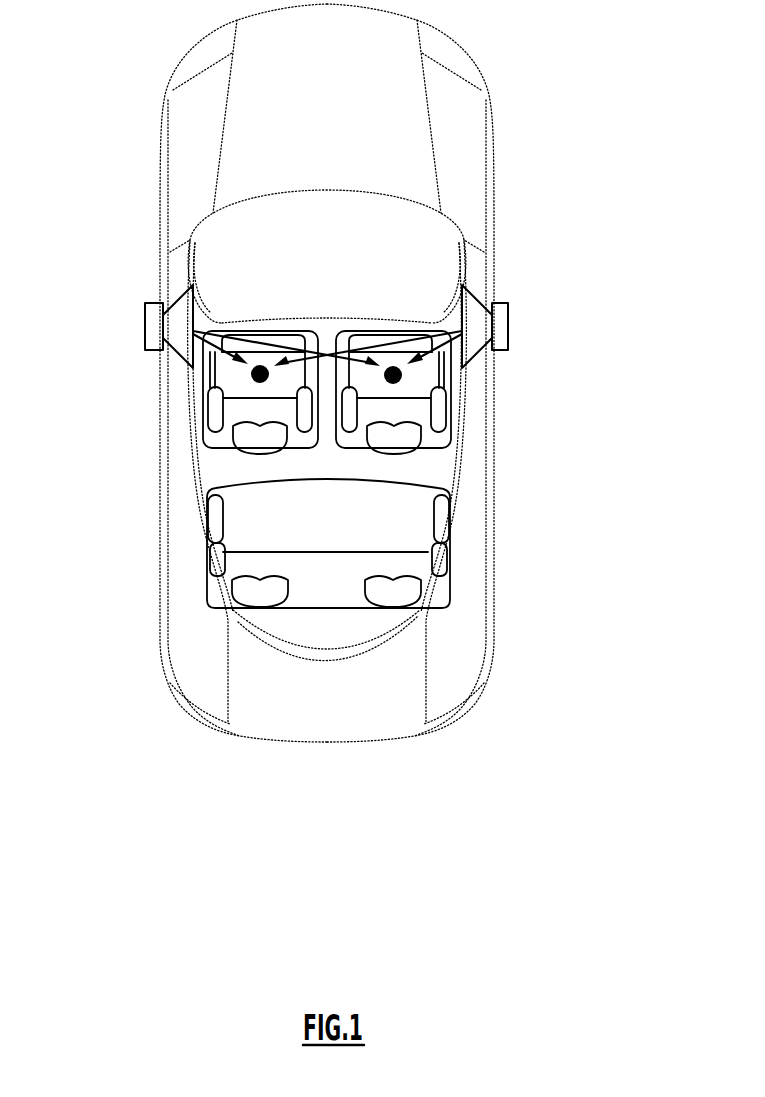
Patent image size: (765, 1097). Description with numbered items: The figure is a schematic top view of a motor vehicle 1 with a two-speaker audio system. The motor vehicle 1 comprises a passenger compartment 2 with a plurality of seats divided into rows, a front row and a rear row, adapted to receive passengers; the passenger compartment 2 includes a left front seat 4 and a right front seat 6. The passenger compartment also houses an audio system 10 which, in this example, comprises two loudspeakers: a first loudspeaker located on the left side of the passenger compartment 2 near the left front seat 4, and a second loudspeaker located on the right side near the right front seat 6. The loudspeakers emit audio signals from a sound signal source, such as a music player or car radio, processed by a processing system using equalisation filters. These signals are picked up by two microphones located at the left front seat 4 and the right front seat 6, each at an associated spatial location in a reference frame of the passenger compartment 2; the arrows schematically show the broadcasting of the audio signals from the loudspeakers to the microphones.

The motor vehicle 1 is at (562, 187).
The audio system 10 is at (563, 300).
The left front seat 4 is at (235, 404).
The right front seat 6 is at (422, 410).
The passenger compartment 2 is at (486, 524).